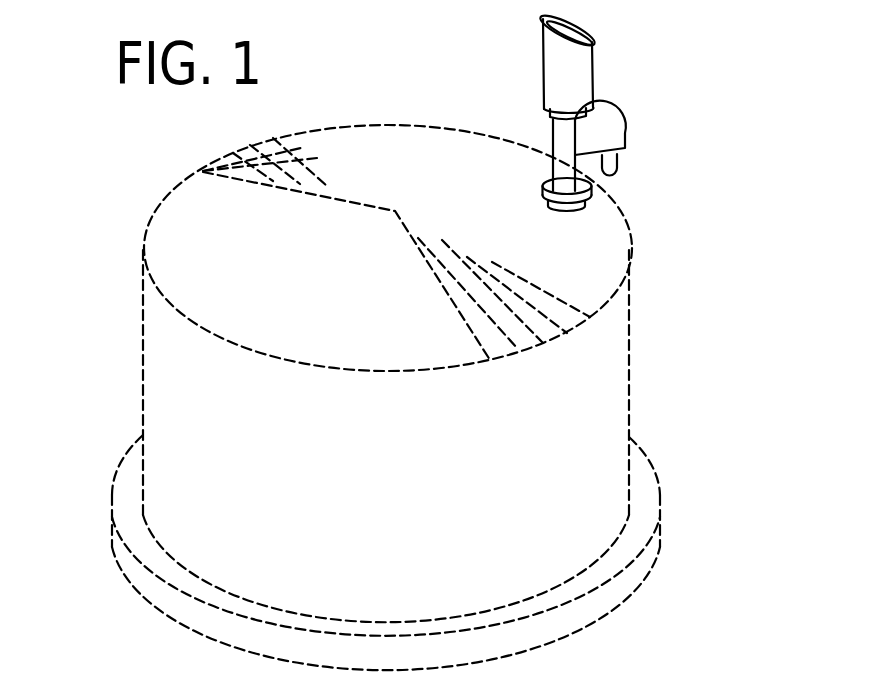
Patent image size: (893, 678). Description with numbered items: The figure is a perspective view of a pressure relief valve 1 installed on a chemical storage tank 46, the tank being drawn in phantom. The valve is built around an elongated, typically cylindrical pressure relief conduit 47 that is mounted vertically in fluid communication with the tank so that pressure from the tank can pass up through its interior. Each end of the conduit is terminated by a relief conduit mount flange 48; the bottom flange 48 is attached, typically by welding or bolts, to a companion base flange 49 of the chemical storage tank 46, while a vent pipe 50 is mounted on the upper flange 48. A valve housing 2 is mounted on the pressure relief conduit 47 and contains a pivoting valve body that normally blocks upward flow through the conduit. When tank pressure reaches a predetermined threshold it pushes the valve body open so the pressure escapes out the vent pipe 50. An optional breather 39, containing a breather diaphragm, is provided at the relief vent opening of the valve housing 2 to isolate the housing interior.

The pressure relief valve 1 is at (454, 342).
The valve housing 2 is at (617, 111).
The breather 39 is at (628, 156).
The chemical storage tank 46 is at (153, 215).
The pressure relief conduit 47 is at (546, 166).
The relief conduit mount flange 48 is at (548, 114).
The base flange 49 is at (593, 196).
The vent pipe 50 is at (558, 45).